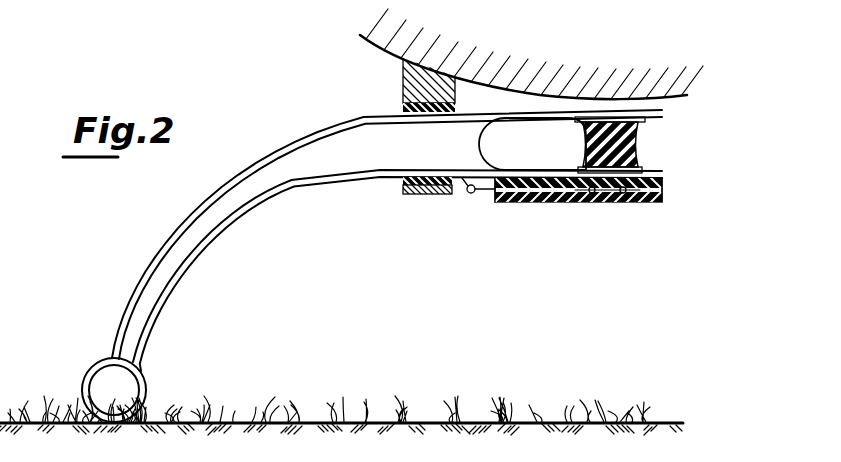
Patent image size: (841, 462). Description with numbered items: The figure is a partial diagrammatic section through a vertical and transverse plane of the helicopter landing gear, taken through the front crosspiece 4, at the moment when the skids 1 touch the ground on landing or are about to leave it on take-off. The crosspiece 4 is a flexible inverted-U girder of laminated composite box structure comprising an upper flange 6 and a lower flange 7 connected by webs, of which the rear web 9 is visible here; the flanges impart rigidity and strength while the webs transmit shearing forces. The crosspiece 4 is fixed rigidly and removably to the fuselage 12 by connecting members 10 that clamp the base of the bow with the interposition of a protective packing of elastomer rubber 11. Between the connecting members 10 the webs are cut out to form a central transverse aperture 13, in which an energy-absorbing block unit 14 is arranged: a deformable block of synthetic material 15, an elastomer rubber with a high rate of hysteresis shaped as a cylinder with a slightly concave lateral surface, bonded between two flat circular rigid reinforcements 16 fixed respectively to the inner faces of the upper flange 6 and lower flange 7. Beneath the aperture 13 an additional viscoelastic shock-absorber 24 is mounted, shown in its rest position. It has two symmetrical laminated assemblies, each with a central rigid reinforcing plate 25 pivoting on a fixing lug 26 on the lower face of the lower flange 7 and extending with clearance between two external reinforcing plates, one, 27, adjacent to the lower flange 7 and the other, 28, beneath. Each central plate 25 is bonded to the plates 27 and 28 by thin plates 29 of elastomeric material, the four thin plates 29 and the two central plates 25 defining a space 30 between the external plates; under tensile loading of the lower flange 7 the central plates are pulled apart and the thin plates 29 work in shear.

The skid 1 is at (93, 365).
The front crosspiece 4 is at (366, 219).
The upper flange 6 is at (325, 123).
The lower flange 7 is at (237, 218).
The rear web 9 is at (285, 158).
The connecting member 10 is at (420, 194).
The protective packing of elastomer rubber 11 is at (397, 185).
The fuselage 12 is at (392, 40).
The central transverse aperture 13 is at (535, 133).
The energy-absorbing block unit 14 is at (636, 94).
The deformable block of synthetic material 15 is at (610, 122).
The rigid reinforcement 16 is at (575, 120).
The viscoelastic shock-absorber 24 is at (615, 222).
The central rigid reinforcing plate 25 is at (515, 181).
The fixing lug 26 is at (459, 186).
The external rigid reinforcing plate 27 is at (597, 182).
The external rigid reinforcing plate 28 is at (623, 201).
The thin plate of elastomeric material 29 is at (533, 181).
The space 30 is at (605, 192).